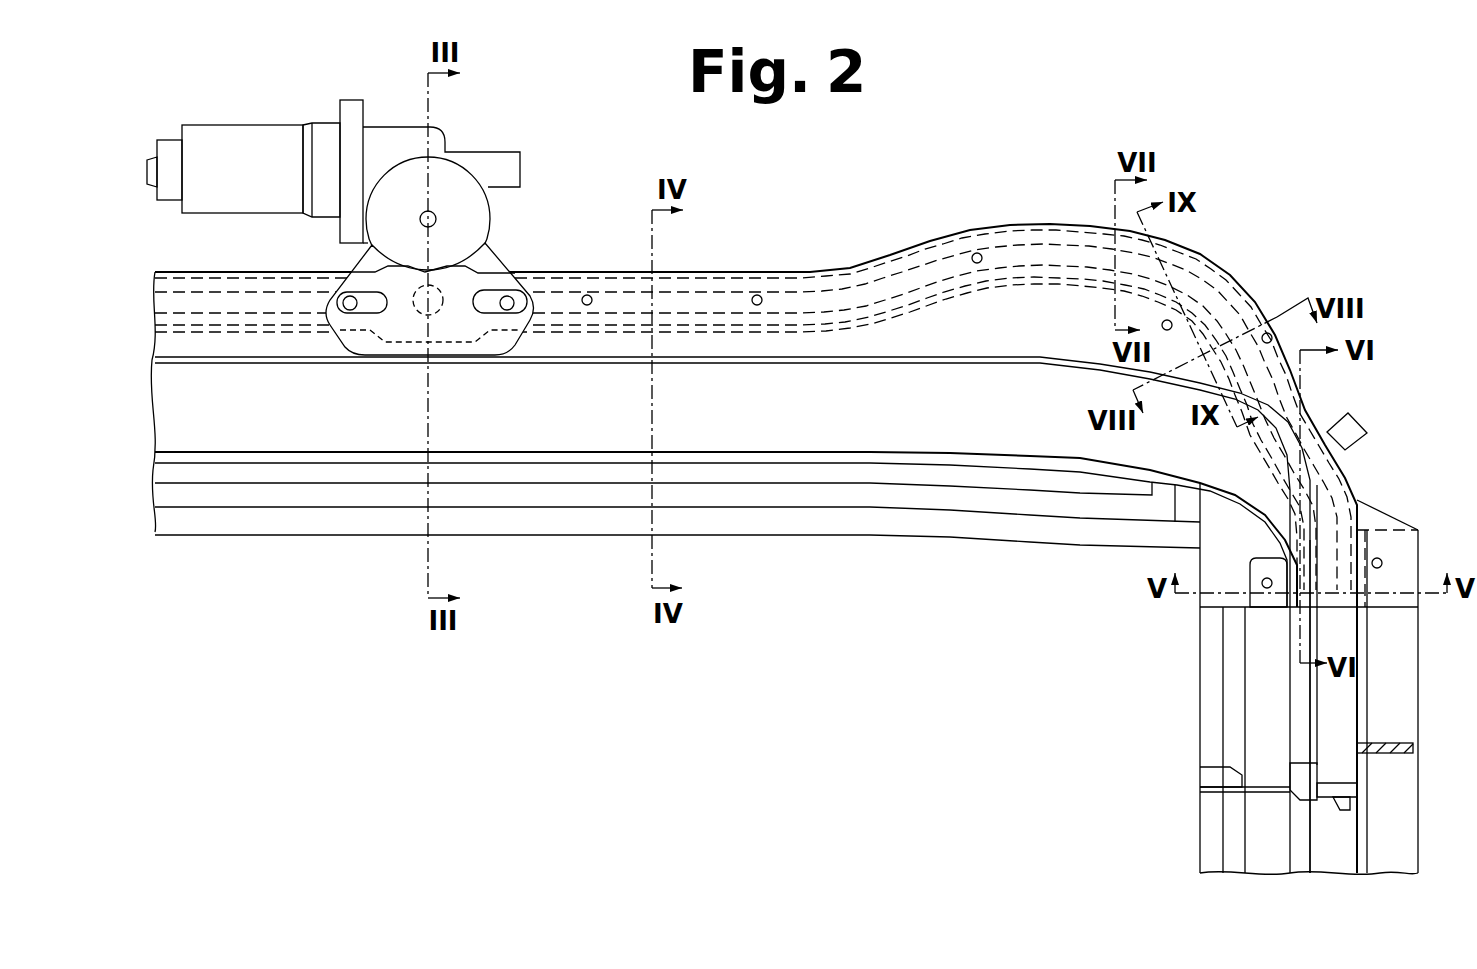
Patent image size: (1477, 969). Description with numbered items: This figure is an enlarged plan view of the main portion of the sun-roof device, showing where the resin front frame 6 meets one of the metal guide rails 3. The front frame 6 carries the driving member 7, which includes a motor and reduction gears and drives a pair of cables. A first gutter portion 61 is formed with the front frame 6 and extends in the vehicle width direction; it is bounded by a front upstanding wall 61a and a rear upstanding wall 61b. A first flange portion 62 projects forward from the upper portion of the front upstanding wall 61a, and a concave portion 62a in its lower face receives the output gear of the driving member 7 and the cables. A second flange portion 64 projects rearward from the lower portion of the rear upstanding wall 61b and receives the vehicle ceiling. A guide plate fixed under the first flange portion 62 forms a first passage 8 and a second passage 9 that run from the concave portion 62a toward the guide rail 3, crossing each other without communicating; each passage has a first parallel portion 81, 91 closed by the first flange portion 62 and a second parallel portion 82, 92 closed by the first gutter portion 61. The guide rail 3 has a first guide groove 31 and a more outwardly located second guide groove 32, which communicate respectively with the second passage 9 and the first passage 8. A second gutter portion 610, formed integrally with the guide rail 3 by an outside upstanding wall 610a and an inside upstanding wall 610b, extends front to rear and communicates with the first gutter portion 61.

The guide rail 3 is at (1275, 643).
The front frame 6 is at (754, 517).
The driving member 7 is at (257, 123).
The first passage 8 is at (255, 325).
The second passage 9 is at (247, 283).
The first guide groove 31 is at (1293, 807).
The second guide groove 32 is at (1343, 807).
The first gutter portion 61 is at (726, 525).
The front upstanding wall 61a is at (708, 360).
The rear upstanding wall 61b is at (300, 462).
The first flange portion 62 is at (868, 283).
The concave portion 62a is at (470, 277).
The second flange portion 64 is at (523, 495).
The first parallel portion 81 is at (807, 323).
The second parallel portion 82 is at (1340, 500).
The first parallel portion 91 is at (787, 278).
The second parallel portion 92 is at (1287, 497).
The second gutter portion 610 is at (1275, 679).
The outside upstanding wall 610a is at (1362, 692).
The inside upstanding wall 610b is at (1307, 728).